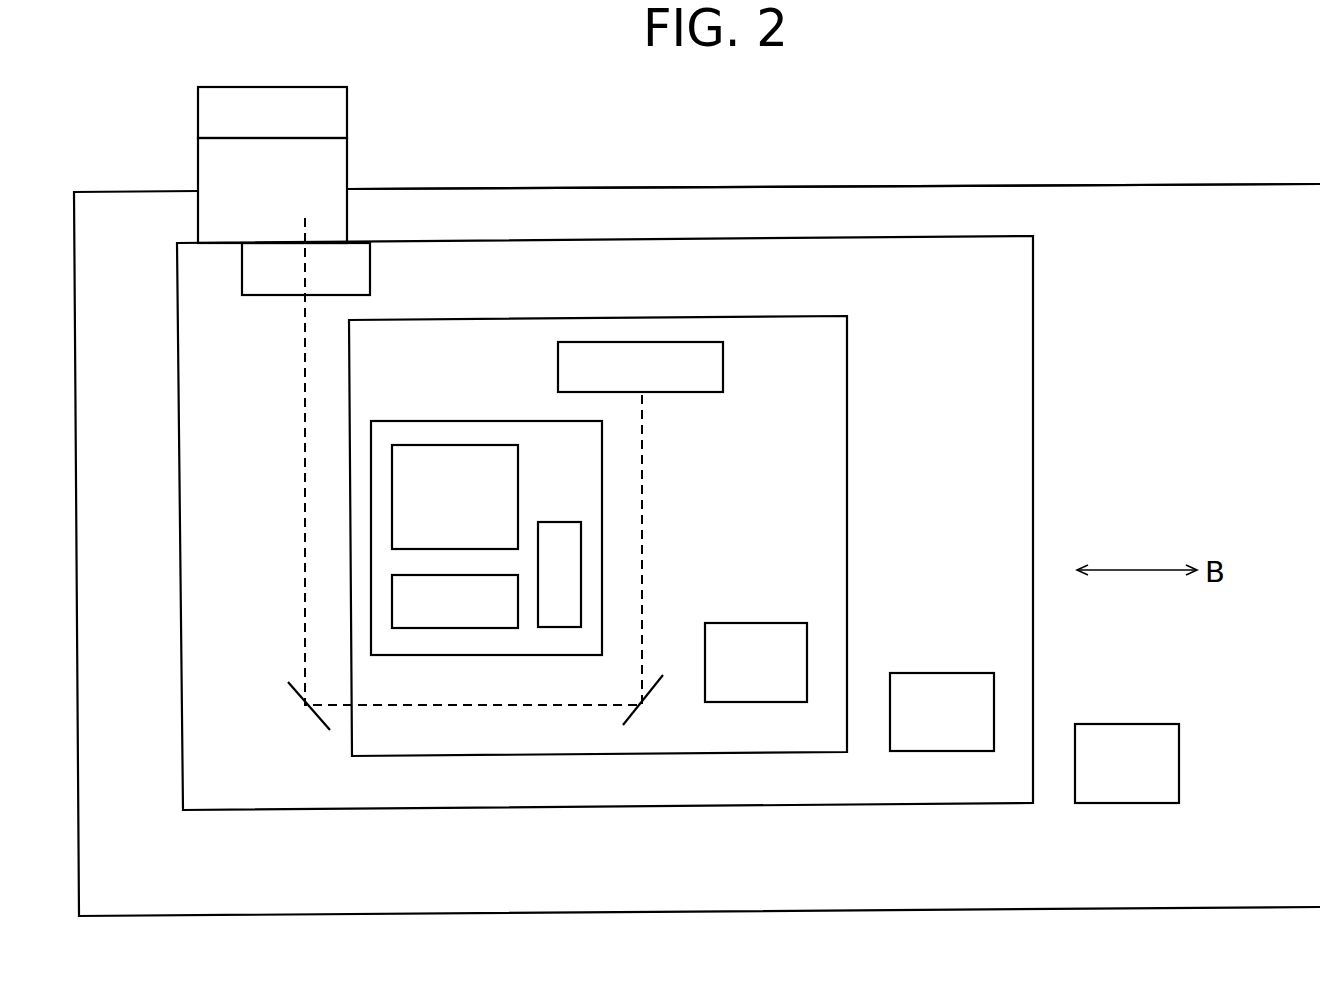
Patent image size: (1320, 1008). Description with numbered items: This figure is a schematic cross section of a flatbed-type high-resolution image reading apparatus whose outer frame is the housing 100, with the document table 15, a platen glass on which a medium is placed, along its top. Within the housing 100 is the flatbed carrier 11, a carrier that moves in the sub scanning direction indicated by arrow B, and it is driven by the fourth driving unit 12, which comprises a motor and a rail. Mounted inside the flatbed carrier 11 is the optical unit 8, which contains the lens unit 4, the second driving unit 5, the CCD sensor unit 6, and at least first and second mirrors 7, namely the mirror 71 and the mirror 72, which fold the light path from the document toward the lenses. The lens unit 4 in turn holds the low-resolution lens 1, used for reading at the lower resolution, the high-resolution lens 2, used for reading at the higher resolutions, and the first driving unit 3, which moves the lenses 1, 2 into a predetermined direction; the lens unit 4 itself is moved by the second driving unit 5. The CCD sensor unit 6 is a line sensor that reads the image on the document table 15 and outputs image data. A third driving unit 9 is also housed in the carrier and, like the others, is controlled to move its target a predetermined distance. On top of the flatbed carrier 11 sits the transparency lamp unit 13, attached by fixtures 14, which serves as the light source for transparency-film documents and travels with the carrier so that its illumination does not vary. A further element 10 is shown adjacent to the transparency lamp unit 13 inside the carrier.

The low-resolution lens 1 is at (581, 575).
The high-resolution lens 2 is at (392, 602).
The first driving unit 3 is at (447, 445).
The lens unit 4 is at (602, 470).
The second driving unit 5 is at (757, 623).
The CCD sensor unit 6 is at (708, 393).
The first and second mirrors 7 is at (471, 779).
The first mirror 71 is at (632, 717).
The second mirror 72 is at (318, 722).
The optical unit 8 is at (847, 385).
The third driving unit 9 is at (940, 673).
The component 10 is at (370, 270).
The flatbed carrier 11 is at (1033, 296).
The fourth driving unit 12 is at (1163, 724).
The transparency lamp unit 13 is at (198, 107).
The fixtures 14 is at (198, 165).
The document table 15 is at (810, 183).
The housing 100 is at (79, 771).